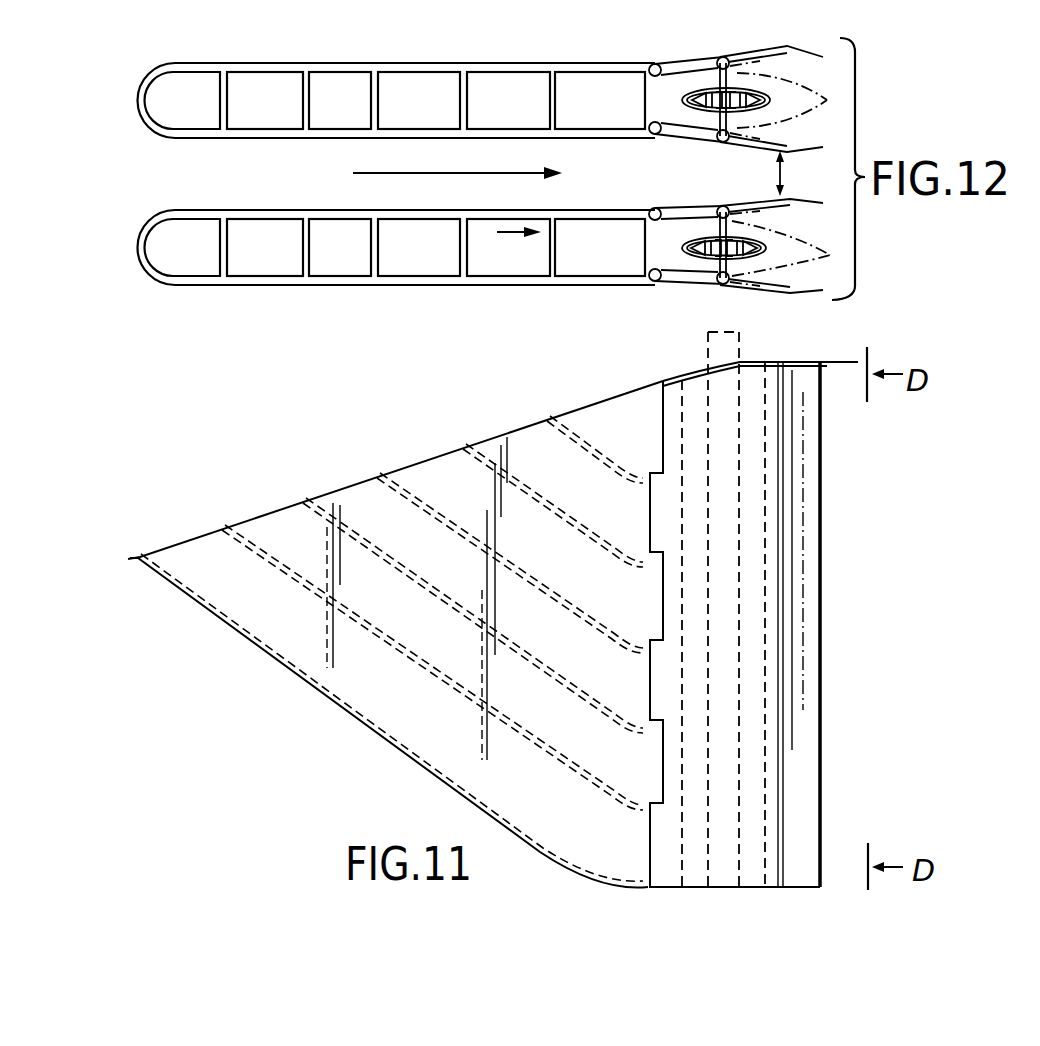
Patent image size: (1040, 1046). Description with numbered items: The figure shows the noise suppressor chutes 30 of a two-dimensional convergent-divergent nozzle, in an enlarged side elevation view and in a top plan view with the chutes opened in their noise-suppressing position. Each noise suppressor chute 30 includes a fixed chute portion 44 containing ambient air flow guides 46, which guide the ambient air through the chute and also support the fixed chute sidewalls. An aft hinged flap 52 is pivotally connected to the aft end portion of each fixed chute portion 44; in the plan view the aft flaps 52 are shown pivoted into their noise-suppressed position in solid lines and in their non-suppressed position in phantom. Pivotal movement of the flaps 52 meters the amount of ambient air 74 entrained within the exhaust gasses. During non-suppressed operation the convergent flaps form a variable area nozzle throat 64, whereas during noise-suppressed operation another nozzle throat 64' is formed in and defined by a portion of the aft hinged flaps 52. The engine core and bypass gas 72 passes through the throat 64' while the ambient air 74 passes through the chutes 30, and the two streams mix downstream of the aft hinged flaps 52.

In FIG. 12, the noise suppressor chute 30 is at (207, 153).
In FIG. 11, the noise suppressor chute 30 is at (330, 721).
In FIG. 12, the fixed chute portion 44 is at (330, 137).
In FIG. 11, the ambient air flow guides 46 is at (358, 545).
In FIG. 12, the aft hinged flap 52 is at (770, 145).
In FIG. 11, the aft hinged flap 52 is at (757, 790).
In FIG. 12, the variable area nozzle throat 64 is at (743, 173).
In FIG. 11, the nozzle throat 64' is at (838, 625).
In FIG. 12, the engine core and bypass gas 72 is at (457, 172).
In FIG. 12, the ambient air 74 is at (512, 200).